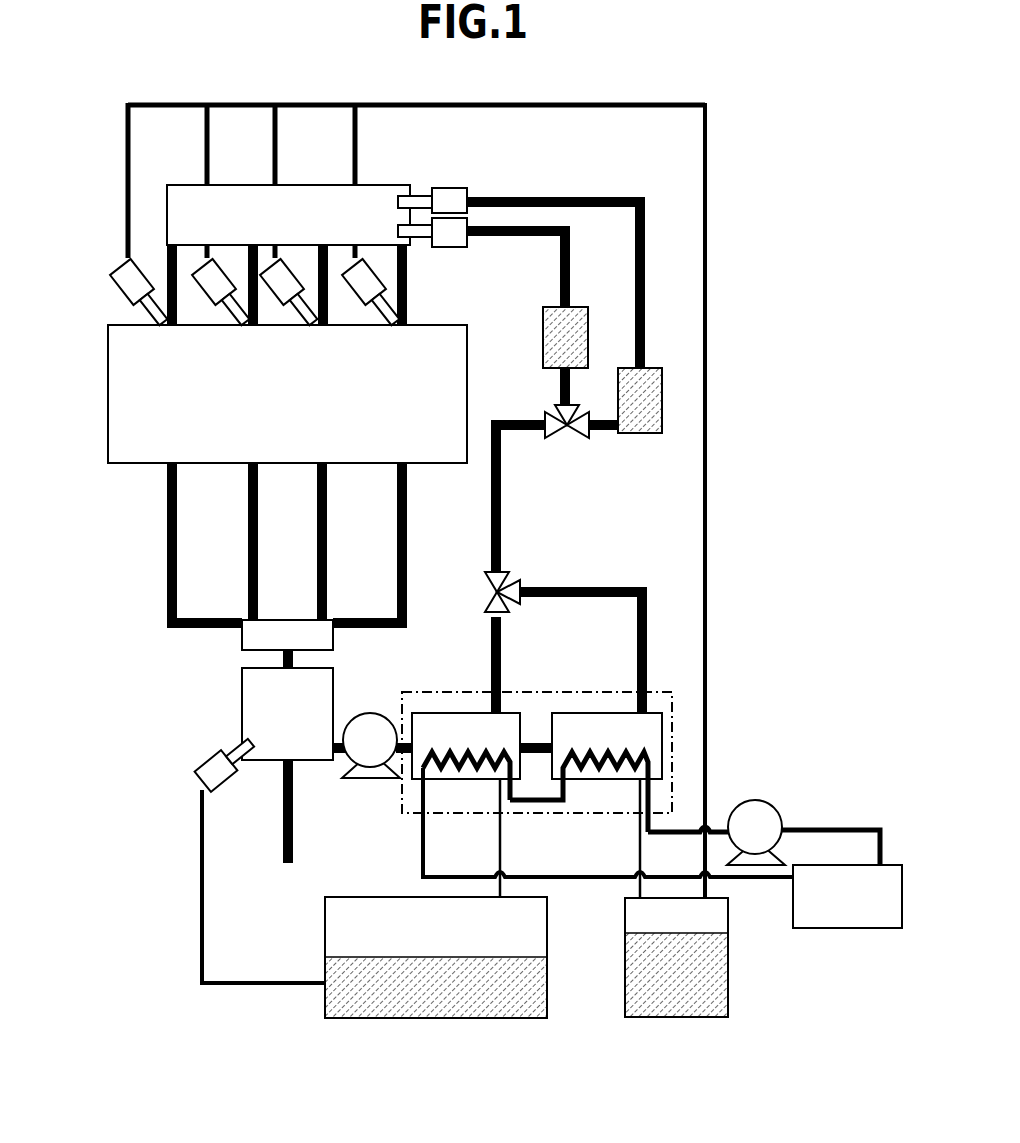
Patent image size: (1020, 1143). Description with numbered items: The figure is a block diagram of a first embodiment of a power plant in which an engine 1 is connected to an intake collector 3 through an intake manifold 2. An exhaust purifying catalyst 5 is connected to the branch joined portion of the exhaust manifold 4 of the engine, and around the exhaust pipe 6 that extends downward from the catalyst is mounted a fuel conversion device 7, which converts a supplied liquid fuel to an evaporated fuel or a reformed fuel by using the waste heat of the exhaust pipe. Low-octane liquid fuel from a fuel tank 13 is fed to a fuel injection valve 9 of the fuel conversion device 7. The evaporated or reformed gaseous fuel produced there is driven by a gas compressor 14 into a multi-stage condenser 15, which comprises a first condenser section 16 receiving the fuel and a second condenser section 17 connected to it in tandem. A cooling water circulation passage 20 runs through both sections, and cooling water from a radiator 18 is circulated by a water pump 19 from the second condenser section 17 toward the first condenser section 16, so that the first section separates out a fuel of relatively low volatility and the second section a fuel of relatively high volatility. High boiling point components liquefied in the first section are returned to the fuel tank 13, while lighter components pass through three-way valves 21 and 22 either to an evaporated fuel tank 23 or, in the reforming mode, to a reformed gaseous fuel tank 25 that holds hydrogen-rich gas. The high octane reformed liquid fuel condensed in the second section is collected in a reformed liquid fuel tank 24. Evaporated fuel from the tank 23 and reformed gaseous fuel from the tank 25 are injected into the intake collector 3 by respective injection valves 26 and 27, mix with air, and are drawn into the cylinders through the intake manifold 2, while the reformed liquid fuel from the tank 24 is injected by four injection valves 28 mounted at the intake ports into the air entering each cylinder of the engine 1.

The engine 1 is at (117, 402).
The intake manifold 2 is at (168, 260).
The intake collector 3 is at (176, 208).
The exhaust manifold 4 is at (168, 568).
The exhaust purifying catalyst 5 is at (248, 640).
The exhaust pipe 6 is at (283, 858).
The fuel conversion device 7 is at (248, 695).
The fuel injection valve 9 is at (205, 768).
The fuel tank 13 is at (452, 1004).
The gas compressor 14 is at (370, 731).
The condenser 15 is at (680, 688).
The first condenser section 16 is at (507, 722).
The second condenser section 17 is at (655, 736).
The radiator 18 is at (832, 920).
The water pump 19 is at (760, 810).
The cooling water circulation passage 20 is at (815, 830).
The three-way valve 21 is at (508, 577).
The three-way valve 22 is at (569, 437).
The evaporated fuel tank 23 is at (551, 358).
The reformed liquid fuel tank 24 is at (680, 998).
The reformed gaseous fuel tank 25 is at (652, 390).
The injection valve 26 is at (449, 248).
The injection valve 27 is at (447, 188).
The injection valves 28 is at (123, 287).